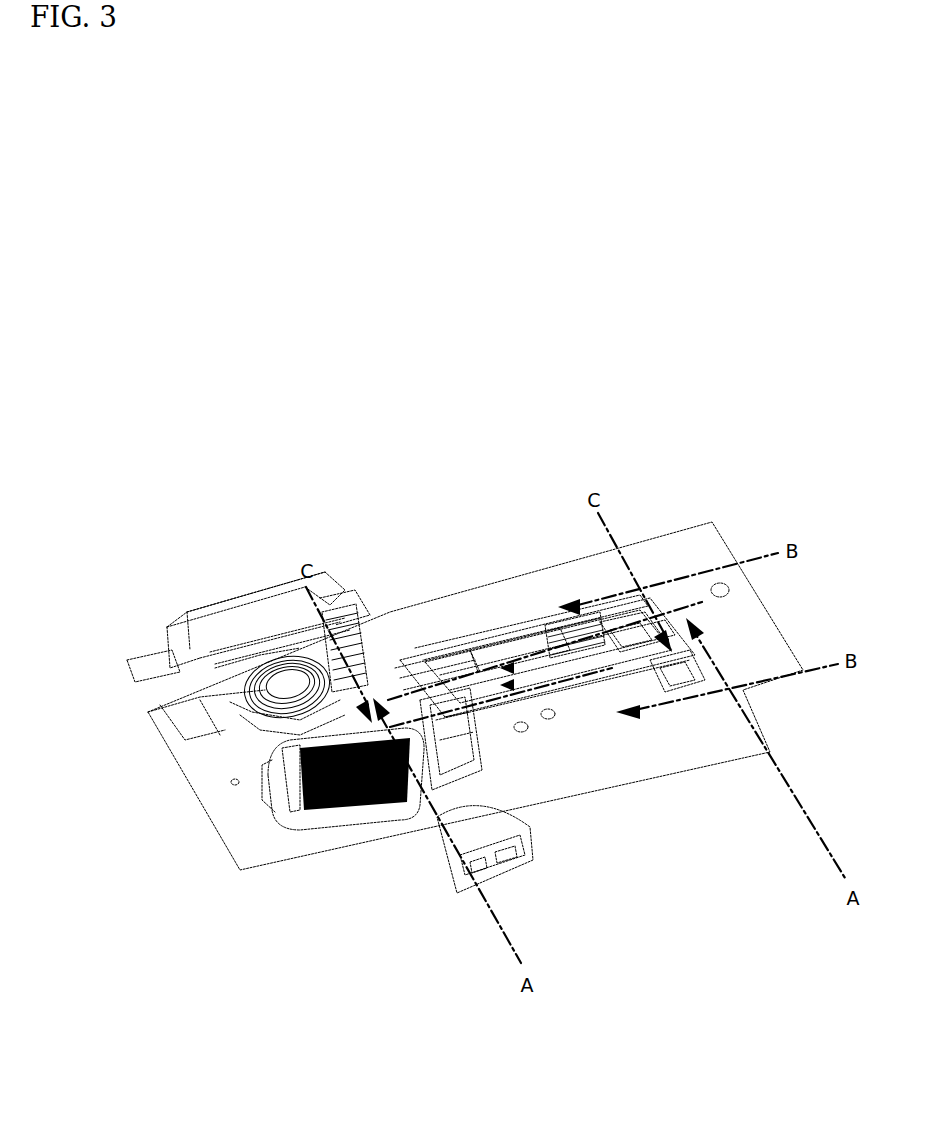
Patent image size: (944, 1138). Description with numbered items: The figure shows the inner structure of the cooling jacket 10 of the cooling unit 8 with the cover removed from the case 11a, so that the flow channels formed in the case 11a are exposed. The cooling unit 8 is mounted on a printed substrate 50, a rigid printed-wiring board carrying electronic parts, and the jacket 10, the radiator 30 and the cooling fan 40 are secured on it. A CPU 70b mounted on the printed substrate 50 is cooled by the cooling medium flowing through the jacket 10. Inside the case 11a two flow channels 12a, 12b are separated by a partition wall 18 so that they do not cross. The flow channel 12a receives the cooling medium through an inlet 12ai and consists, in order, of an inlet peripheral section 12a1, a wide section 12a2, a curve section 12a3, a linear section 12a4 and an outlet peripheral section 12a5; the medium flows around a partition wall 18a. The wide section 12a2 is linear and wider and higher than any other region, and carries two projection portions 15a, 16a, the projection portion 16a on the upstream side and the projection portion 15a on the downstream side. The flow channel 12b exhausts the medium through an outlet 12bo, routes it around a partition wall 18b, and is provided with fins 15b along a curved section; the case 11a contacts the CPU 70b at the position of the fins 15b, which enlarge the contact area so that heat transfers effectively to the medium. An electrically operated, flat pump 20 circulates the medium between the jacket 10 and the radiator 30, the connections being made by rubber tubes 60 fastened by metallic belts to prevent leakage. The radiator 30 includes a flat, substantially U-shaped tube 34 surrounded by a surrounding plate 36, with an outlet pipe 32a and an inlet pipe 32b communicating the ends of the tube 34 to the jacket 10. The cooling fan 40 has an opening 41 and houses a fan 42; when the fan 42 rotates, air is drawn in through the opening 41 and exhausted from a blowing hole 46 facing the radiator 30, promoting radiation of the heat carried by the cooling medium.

The cooling unit 8 is at (122, 525).
The cooling jacket 10 is at (627, 630).
The case 11a is at (690, 740).
The flow channel 12a is at (640, 643).
The inlet peripheral section 12a1 is at (427, 700).
The wide section 12a2 is at (520, 670).
The curve section 12a3 is at (610, 645).
The linear section 12a4 is at (603, 738).
The outlet peripheral section 12a5 is at (440, 732).
The inlet 12ai is at (400, 700).
The flow channel 12b is at (413, 750).
The outlet 12bo is at (382, 683).
The projection portion 15a is at (560, 632).
The fins 15b is at (347, 785).
The projection portion 16a is at (463, 670).
The partition wall 18 is at (460, 700).
The partition wall 18a is at (557, 685).
The partition wall 18b is at (432, 745).
The pump 20 is at (540, 861).
The radiator 30 is at (292, 582).
The outlet pipe 32a is at (340, 640).
The inlet pipe 32b is at (345, 630).
The tube 34 is at (258, 564).
The surrounding plate 36 is at (252, 574).
The cooling fan 40 is at (185, 690).
The opening 41 is at (200, 697).
The fan 42 is at (234, 716).
The blowing hole 46 is at (215, 668).
The printed substrate 50 is at (778, 612).
The rubber tubes 60 is at (327, 645).
The CPU 70b is at (340, 800).